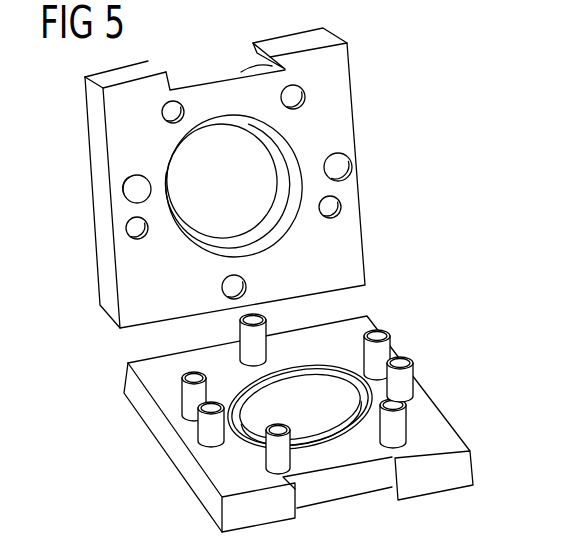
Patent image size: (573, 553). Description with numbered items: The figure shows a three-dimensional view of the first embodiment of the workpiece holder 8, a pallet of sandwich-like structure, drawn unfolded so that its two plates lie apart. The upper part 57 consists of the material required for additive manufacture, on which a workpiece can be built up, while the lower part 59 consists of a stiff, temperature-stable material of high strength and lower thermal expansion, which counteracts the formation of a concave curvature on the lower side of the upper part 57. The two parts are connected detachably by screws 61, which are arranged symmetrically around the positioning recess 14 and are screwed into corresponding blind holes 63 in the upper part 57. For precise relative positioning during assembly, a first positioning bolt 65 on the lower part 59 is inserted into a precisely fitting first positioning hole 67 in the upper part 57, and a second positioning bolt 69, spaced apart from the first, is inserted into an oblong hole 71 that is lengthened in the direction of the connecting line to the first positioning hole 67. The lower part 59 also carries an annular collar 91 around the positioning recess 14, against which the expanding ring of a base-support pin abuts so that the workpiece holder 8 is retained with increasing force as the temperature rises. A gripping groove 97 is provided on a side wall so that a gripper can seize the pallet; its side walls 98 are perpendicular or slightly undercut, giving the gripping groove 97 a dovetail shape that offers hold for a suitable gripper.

The workpiece holder 8 is at (427, 146).
The positioning recess 14 is at (195, 208).
The upper part 57 is at (337, 62).
The lower part 59 is at (433, 430).
The screws 61 is at (186, 400).
The blind holes 63 is at (166, 121).
The first positioning bolt 65 is at (405, 373).
The first positioning hole 67 is at (350, 172).
The second positioning bolt 69 is at (205, 428).
The oblong hole 71 is at (133, 196).
The annular collar 91 is at (248, 393).
The gripping groove 97 is at (284, 70).
The side walls of gripping groove 98 is at (254, 54).